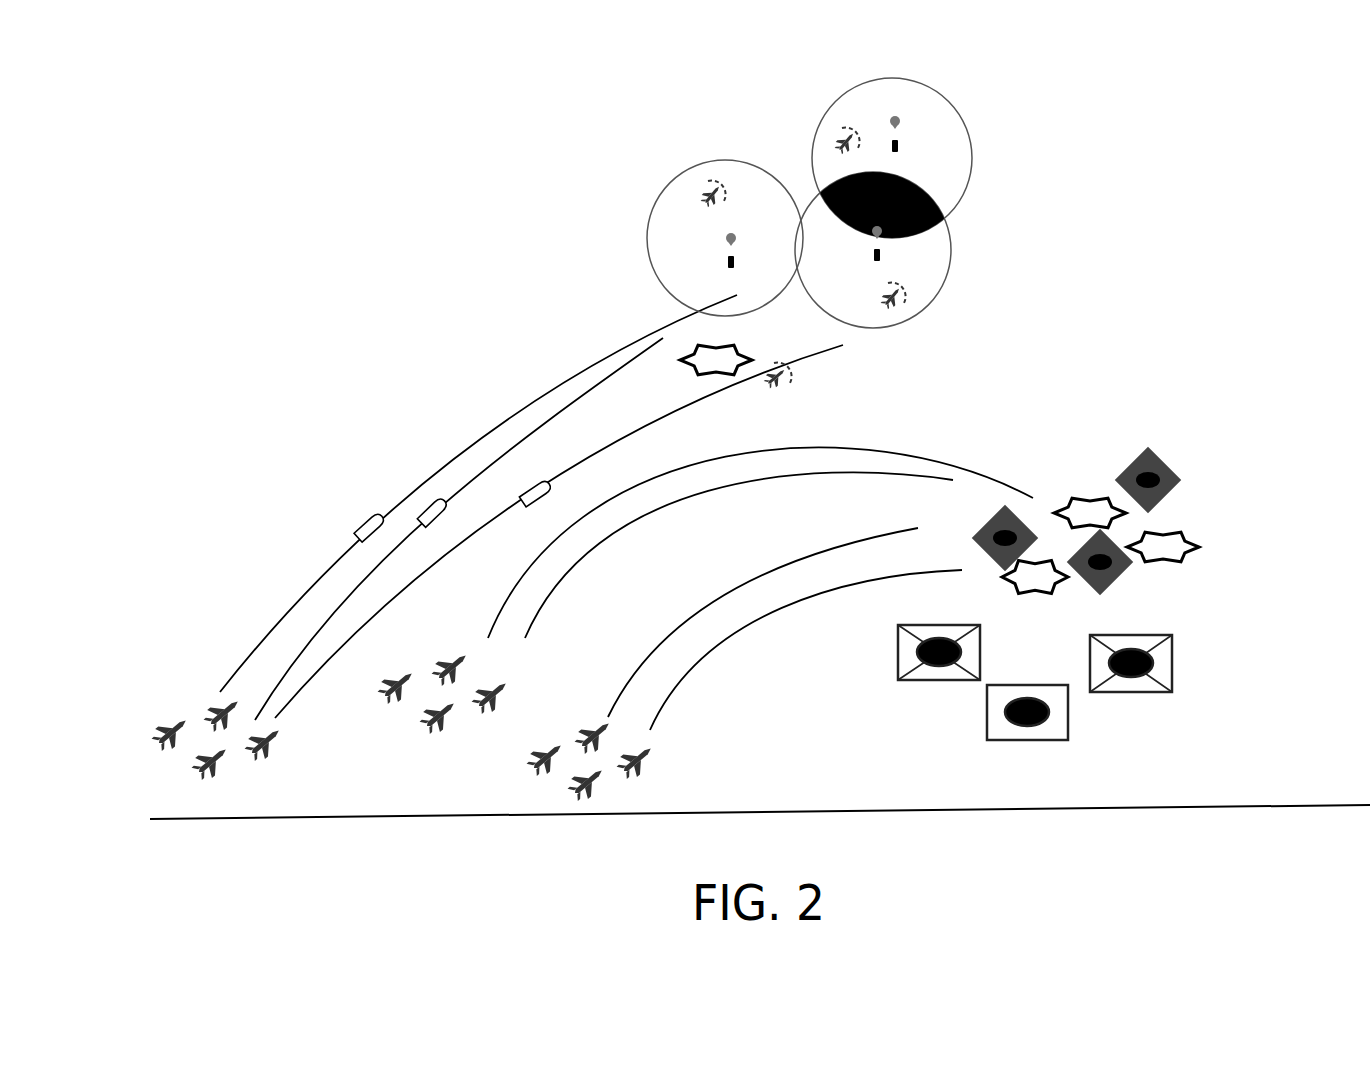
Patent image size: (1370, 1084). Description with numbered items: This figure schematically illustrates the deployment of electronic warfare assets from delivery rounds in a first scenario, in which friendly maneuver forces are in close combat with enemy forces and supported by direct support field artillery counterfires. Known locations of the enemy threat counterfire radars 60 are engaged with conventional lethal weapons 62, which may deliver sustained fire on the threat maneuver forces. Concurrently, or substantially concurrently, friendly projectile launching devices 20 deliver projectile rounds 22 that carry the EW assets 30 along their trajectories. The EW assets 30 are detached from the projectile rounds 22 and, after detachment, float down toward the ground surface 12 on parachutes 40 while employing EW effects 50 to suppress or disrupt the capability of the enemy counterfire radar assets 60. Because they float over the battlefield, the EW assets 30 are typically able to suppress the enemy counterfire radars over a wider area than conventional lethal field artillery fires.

The ground surface 12 is at (1183, 807).
The projectile launching devices 20 is at (204, 689).
The projectile rounds 22 is at (532, 482).
The EW assets 30 is at (728, 260).
The parachutes 40 is at (718, 233).
The EW effects 50 is at (847, 142).
The threat counterfire radars 60 is at (1221, 610).
The conventional lethal weapons 62 is at (512, 770).